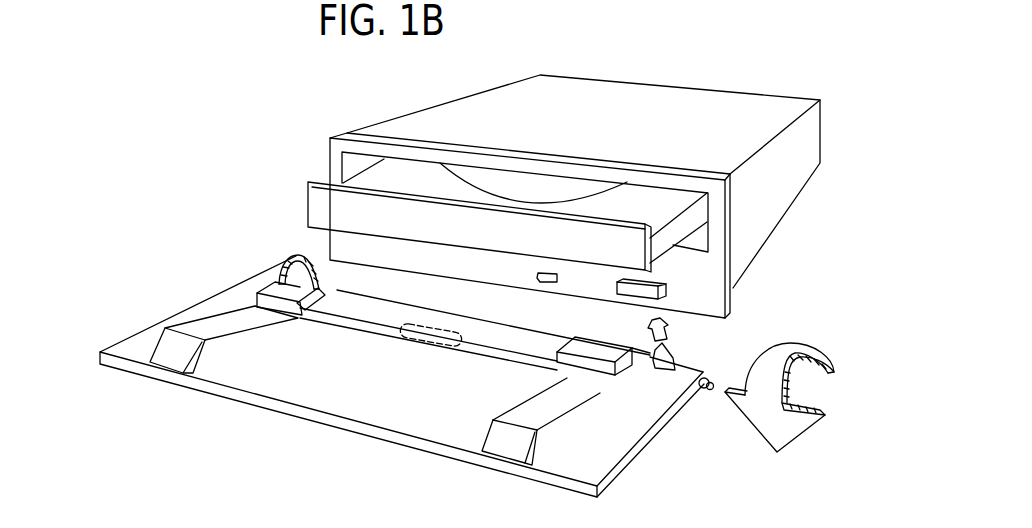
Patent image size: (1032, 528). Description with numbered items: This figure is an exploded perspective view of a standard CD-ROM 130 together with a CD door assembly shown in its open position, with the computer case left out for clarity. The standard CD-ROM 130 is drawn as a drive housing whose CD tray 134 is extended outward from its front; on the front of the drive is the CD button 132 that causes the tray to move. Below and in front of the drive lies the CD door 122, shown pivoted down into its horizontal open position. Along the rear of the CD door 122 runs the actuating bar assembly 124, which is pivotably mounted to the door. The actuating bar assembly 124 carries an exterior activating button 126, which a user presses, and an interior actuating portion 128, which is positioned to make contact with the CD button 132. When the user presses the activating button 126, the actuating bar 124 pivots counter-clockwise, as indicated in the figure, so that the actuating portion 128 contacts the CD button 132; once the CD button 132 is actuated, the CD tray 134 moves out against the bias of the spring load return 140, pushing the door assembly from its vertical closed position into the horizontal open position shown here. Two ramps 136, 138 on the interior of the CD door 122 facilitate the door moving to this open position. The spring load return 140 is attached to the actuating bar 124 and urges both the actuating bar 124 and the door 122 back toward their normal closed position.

The CD door 122 is at (343, 432).
The actuating bar assembly 124 is at (583, 348).
The exterior activating button 126 is at (432, 338).
The interior actuating portion 128 is at (613, 355).
The standard CD-ROM 130 is at (573, 100).
The CD button 132 is at (647, 290).
The CD tray 134 is at (577, 240).
The ramp 136 is at (217, 323).
The ramp 138 is at (538, 407).
The spring load return 140 is at (303, 257).